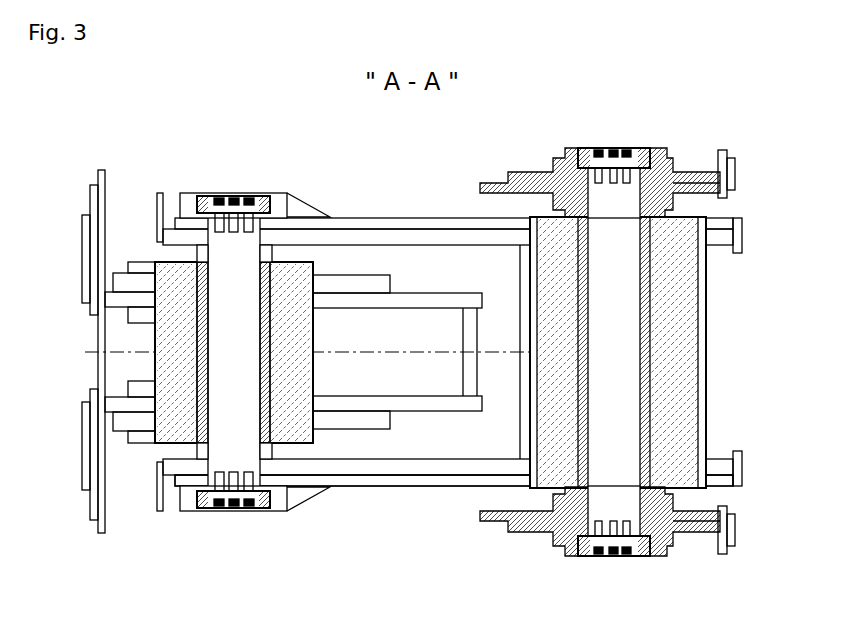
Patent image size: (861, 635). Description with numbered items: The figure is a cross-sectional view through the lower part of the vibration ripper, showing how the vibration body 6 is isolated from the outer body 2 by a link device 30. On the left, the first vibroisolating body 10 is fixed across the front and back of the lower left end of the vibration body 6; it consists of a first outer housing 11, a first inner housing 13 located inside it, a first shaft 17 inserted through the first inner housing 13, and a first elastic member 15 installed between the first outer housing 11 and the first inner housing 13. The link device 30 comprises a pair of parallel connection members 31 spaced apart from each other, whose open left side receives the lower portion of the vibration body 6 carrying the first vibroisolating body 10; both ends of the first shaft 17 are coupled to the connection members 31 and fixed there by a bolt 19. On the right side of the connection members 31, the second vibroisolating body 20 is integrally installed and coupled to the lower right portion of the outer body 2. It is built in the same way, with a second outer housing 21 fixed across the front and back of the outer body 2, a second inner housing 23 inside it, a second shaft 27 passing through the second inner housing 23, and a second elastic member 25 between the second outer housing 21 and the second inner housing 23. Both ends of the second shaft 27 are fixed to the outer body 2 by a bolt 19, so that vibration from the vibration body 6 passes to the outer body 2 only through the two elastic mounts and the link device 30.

The outer body 2 is at (564, 537).
The vibration body 6 is at (367, 298).
The first vibroisolating body 10 is at (111, 333).
The first outer housing 11 is at (150, 424).
The first inner housing 13 is at (180, 372).
The first elastic member 15 is at (170, 333).
The first shaft 17 is at (250, 420).
The bolt 19 is at (600, 148).
The second vibroisolating body 20 is at (680, 352).
The second outer housing 21 is at (700, 437).
The second inner housing 23 is at (650, 396).
The second elastic member 25 is at (678, 267).
The second shaft 27 is at (625, 367).
The link device 30 is at (432, 199).
The connection member 31 is at (374, 487).